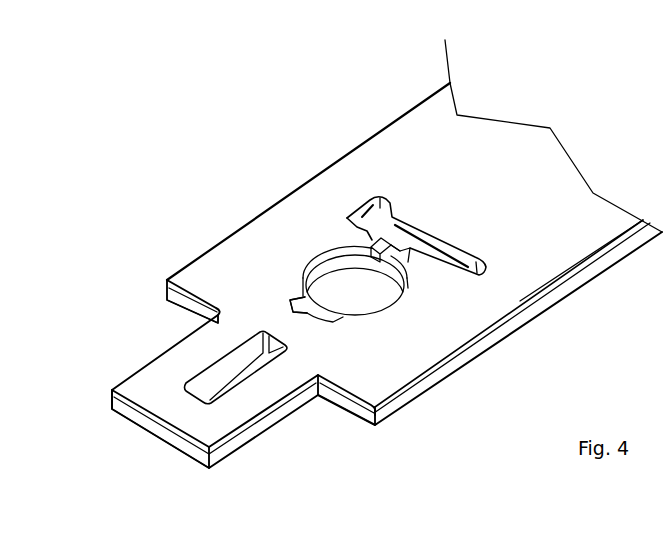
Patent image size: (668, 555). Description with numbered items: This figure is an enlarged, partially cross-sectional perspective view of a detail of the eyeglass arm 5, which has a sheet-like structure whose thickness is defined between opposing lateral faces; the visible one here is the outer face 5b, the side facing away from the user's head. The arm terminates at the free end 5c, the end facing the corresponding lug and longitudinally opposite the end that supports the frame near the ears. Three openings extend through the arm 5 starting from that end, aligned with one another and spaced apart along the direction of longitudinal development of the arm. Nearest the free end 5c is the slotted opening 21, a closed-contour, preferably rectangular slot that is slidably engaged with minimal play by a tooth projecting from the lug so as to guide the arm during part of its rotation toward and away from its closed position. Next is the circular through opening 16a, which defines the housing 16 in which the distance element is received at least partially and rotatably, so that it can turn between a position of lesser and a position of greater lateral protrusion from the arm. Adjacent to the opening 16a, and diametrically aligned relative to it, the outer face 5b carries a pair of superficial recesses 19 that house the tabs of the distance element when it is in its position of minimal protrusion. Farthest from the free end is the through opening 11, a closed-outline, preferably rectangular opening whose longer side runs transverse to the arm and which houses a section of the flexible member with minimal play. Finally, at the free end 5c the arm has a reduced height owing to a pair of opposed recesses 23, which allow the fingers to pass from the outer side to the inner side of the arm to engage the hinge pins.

The arm 5 is at (297, 189).
The outer face of the arm 5b is at (562, 243).
The free end of the arm 5c is at (163, 446).
The through opening 11 is at (373, 210).
The housing 16 is at (328, 313).
The circular through opening 16a is at (368, 318).
The superficial recesses 19 is at (307, 310).
The slotted opening 21 is at (203, 388).
The opposed recesses 23 is at (180, 317).